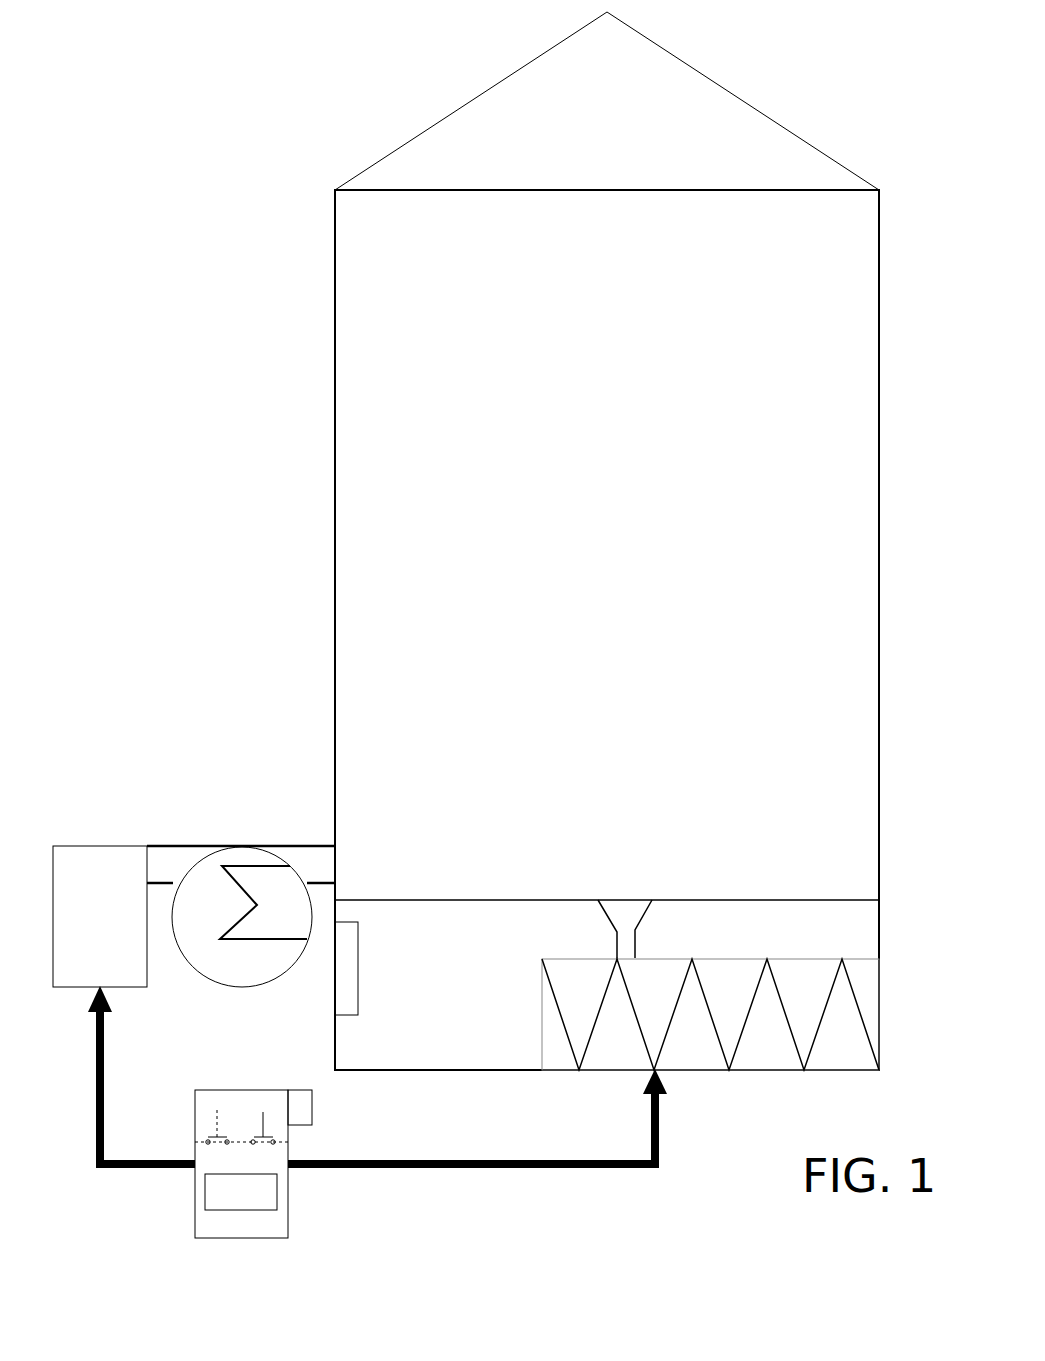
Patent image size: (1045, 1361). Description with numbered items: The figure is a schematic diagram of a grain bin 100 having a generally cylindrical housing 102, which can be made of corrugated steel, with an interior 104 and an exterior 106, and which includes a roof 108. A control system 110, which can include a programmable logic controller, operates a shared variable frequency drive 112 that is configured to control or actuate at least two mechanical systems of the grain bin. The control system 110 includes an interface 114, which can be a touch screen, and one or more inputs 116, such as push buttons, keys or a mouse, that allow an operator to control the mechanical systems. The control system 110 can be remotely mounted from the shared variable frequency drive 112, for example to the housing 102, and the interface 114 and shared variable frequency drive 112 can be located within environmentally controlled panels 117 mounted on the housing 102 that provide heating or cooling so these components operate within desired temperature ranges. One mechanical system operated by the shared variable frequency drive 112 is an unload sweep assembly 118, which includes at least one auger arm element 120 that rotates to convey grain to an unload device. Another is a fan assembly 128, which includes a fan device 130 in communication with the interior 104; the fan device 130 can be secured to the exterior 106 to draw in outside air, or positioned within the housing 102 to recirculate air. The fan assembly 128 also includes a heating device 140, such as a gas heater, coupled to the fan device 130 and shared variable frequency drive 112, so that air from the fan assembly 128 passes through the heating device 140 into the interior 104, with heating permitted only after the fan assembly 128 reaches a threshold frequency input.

The grain bin 100 is at (295, 141).
The housing 102 is at (342, 562).
The interior 104 is at (335, 715).
The exterior 106 is at (335, 415).
The roof 108 is at (735, 101).
The control system 110 is at (187, 1071).
The shared variable frequency drive 112 is at (312, 1108).
The interface 114 is at (277, 1190).
The inputs 116 is at (192, 1141).
The environmentally controlled panels 117 is at (352, 952).
The unload sweep assembly 118 is at (518, 974).
The auger arm element 120 is at (542, 1033).
The fan assembly 128 is at (106, 821).
The fan device 130 is at (100, 916).
The heating device 140 is at (225, 862).